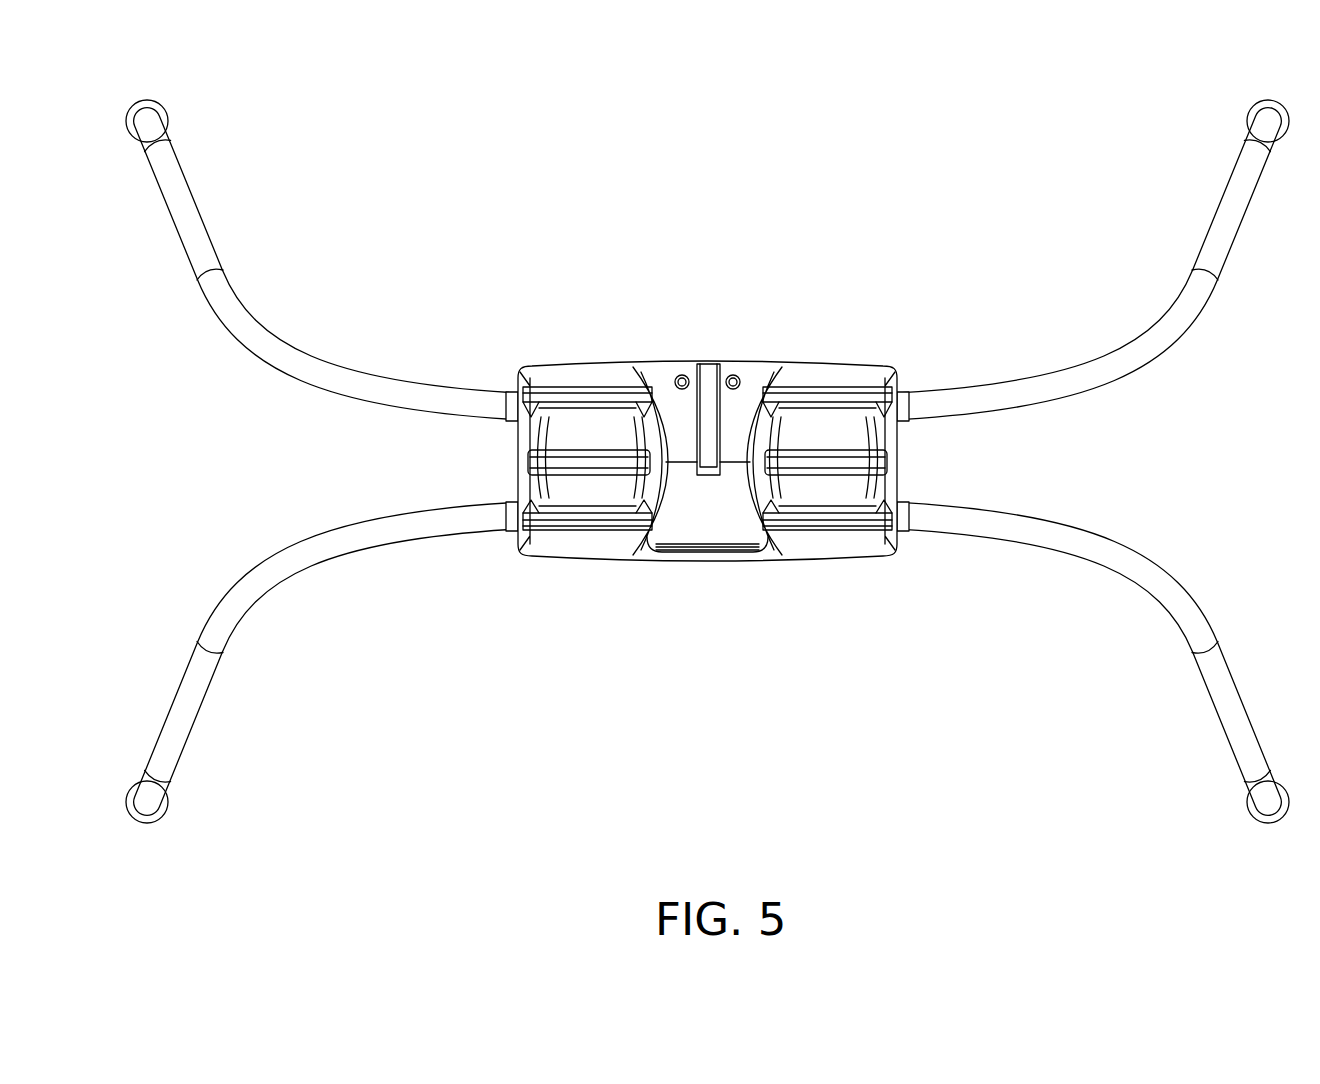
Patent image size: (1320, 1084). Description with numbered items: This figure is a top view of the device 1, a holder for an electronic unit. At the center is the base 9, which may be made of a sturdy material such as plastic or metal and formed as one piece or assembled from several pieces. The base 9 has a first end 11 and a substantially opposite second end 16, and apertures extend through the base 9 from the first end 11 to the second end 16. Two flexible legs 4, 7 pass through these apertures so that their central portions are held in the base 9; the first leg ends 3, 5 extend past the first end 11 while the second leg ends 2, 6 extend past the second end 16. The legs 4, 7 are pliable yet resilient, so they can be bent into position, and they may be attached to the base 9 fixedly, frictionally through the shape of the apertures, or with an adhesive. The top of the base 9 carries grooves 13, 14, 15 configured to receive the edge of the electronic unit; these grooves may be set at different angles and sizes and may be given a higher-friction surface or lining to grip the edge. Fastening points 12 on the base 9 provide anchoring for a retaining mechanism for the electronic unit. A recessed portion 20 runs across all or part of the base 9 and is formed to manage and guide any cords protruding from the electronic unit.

The device 1 is at (707, 455).
The second leg end 2 is at (170, 808).
The first leg end 3 is at (1250, 806).
The flexible leg 4 is at (188, 738).
The first leg end 5 is at (1250, 118).
The second leg end 6 is at (165, 100).
The flexible leg 7 is at (205, 218).
The base 9 is at (707, 557).
The first end 11 is at (905, 464).
The fastening points 12 is at (684, 376).
The groove 13 is at (580, 390).
The groove 14 is at (862, 455).
The groove 15 is at (572, 535).
The second end 16 is at (516, 440).
The recessed portion 20 is at (706, 478).